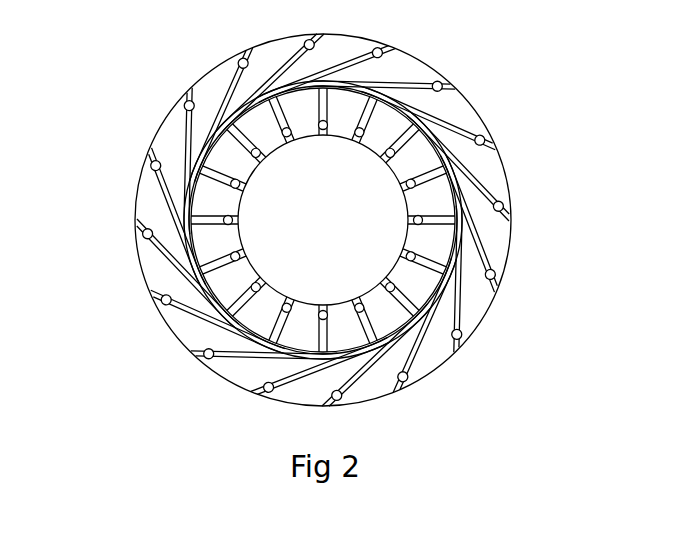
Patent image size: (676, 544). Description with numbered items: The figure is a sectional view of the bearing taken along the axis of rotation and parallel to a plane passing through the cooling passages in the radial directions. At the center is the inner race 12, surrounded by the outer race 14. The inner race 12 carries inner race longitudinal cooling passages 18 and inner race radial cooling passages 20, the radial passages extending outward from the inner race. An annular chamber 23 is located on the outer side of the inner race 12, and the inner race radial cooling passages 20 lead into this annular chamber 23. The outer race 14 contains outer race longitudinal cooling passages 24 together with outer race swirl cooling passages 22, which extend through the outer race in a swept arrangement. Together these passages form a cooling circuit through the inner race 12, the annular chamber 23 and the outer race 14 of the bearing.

The inner race 12 is at (265, 189).
The outer race 14 is at (453, 110).
The inner race longitudinal cooling passages 18 is at (252, 149).
The inner race radial cooling passages 20 is at (200, 178).
The outer race swirl cooling passages 22 is at (410, 85).
The annular chamber 23 is at (460, 208).
The outer race longitudinal cooling passages 24 is at (493, 140).